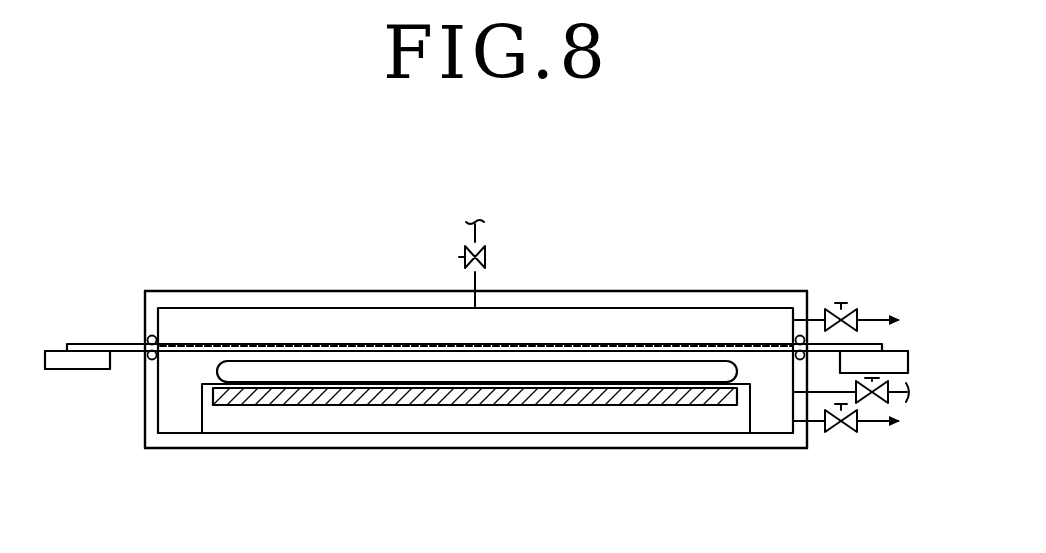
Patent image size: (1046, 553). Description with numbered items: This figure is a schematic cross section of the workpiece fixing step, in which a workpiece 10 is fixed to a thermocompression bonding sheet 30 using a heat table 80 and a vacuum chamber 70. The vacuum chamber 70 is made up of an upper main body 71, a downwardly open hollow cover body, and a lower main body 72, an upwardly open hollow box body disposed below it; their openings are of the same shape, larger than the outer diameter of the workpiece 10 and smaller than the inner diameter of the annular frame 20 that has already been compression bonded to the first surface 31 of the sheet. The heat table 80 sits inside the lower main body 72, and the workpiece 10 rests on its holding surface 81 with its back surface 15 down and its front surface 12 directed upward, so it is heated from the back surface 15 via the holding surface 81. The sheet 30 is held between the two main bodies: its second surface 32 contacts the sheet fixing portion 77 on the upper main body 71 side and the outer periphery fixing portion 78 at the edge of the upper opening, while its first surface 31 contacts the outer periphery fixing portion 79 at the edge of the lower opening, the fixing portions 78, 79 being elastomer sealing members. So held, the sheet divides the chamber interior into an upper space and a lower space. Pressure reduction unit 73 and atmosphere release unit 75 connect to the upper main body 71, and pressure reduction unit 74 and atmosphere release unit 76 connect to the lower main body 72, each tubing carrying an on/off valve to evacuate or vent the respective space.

The workpiece 10 is at (500, 376).
The front surface 12 is at (578, 360).
The back surface 15 is at (551, 407).
The annular frame 20 is at (73, 360).
The thermocompression bonding sheet 30 is at (476, 358).
The first surface 31 is at (136, 352).
The second surface 32 is at (140, 343).
The vacuum chamber 70 is at (748, 246).
The upper main body 71 is at (789, 292).
The lower main body 72 is at (676, 447).
The pressure reduction unit 73 is at (857, 300).
The pressure reduction unit 74 is at (861, 446).
The atmosphere release unit 75 is at (492, 256).
The atmosphere release unit 76 is at (893, 370).
The sheet fixing portion 77 is at (306, 343).
The outer periphery fixing portion 78 is at (153, 336).
The outer periphery fixing portion 79 is at (153, 360).
The heat table 80 is at (231, 436).
The holding surface 81 is at (204, 380).